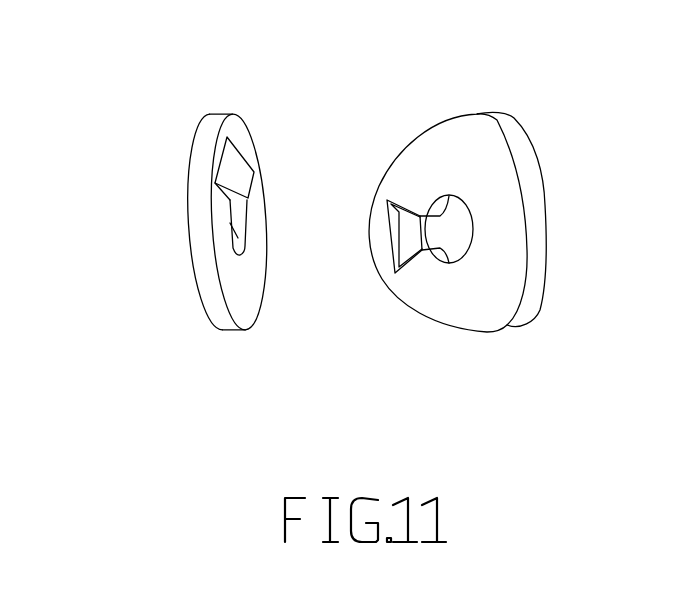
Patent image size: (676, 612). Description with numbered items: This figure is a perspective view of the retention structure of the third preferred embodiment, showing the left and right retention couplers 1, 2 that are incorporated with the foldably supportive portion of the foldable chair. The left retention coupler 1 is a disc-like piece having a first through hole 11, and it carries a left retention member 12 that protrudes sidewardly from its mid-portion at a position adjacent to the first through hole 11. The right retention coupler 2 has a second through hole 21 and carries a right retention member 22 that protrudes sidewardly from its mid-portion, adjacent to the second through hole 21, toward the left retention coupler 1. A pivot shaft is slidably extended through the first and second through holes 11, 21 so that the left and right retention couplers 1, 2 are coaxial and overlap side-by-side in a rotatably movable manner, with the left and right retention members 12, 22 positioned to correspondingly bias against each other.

The left retention coupler 1 is at (205, 152).
The first through hole 11 is at (237, 230).
The left retention member 12 is at (230, 200).
The right retention coupler 2 is at (498, 270).
The second through hole 21 is at (447, 228).
The right retention member 22 is at (388, 200).